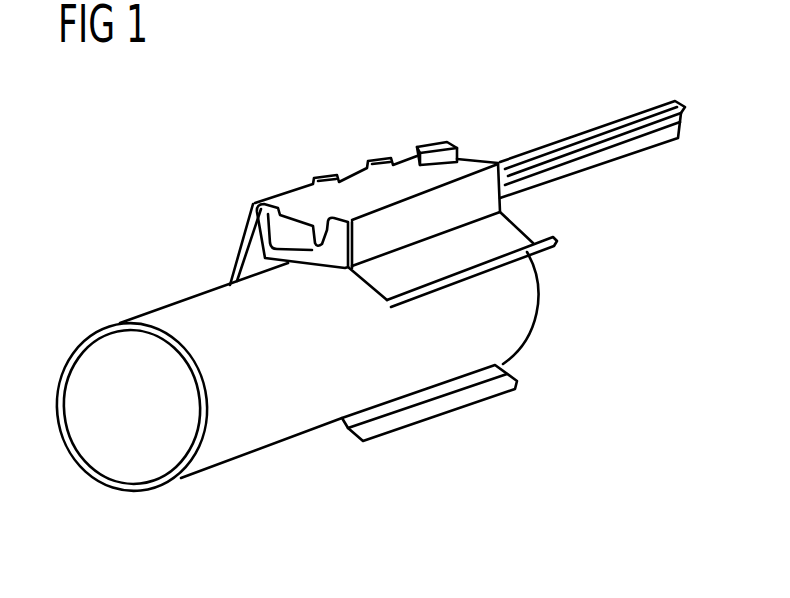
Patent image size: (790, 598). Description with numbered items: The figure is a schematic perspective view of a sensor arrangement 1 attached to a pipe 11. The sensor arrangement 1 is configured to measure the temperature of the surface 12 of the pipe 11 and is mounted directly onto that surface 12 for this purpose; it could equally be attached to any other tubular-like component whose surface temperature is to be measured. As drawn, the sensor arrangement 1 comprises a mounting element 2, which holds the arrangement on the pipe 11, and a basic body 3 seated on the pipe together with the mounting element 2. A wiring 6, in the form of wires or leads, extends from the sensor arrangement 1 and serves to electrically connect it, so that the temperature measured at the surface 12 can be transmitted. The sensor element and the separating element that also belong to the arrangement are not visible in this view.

The sensor arrangement 1 is at (453, 116).
The mounting element 2 is at (502, 230).
The basic body 3 is at (268, 237).
The wiring 6 is at (622, 130).
The pipe 11 is at (243, 465).
The surface 12 is at (306, 424).